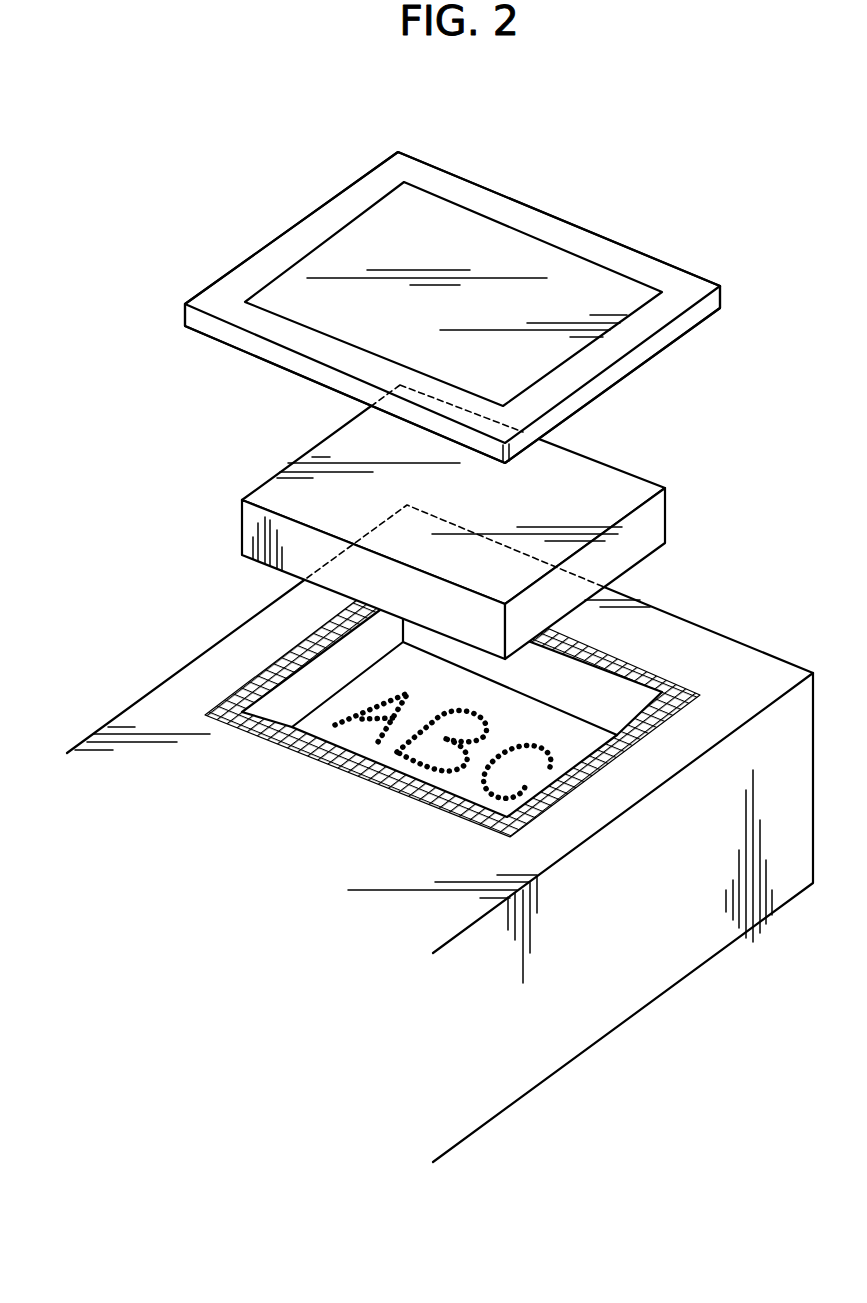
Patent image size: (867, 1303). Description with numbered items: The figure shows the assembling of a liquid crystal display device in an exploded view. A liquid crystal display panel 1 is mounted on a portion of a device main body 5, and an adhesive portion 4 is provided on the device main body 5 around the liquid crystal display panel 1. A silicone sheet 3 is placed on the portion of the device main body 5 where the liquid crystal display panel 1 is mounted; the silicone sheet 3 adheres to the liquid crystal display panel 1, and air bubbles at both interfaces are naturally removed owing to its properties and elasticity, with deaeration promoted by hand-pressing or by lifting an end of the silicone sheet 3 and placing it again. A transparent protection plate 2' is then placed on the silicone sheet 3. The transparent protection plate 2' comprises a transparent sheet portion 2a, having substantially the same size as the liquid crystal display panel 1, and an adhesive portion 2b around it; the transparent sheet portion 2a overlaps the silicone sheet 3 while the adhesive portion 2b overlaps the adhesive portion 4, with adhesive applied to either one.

The liquid crystal display panel 1 is at (592, 690).
The transparent protection plate 2' is at (452, 303).
The transparent sheet portion 2a is at (627, 288).
The adhesive portion 2b is at (600, 245).
The silicone sheet 3 is at (618, 487).
The adhesive portion 4 is at (250, 685).
The device main body 5 is at (140, 730).